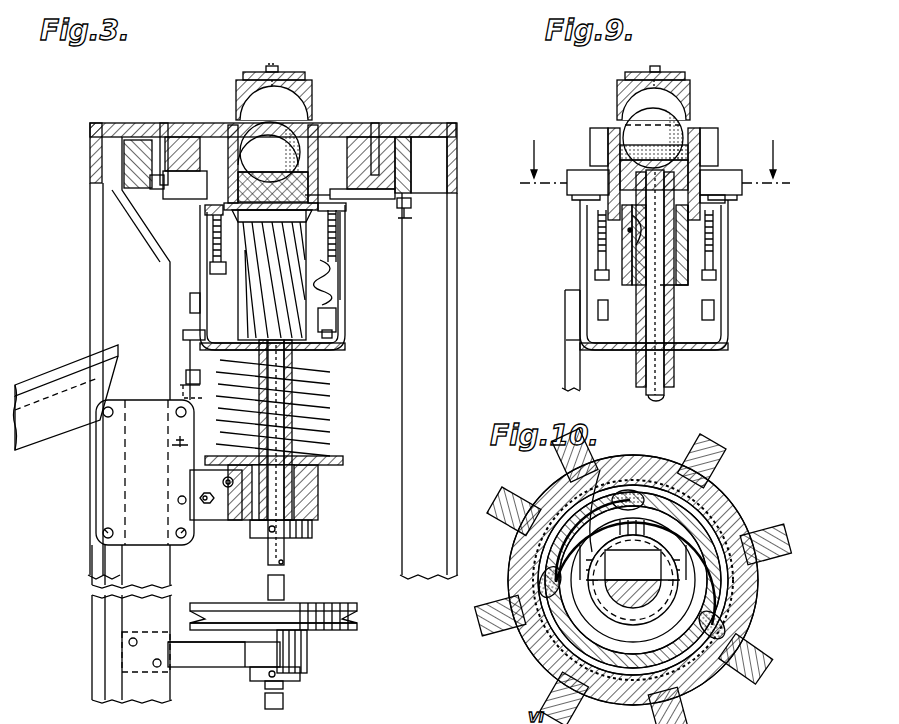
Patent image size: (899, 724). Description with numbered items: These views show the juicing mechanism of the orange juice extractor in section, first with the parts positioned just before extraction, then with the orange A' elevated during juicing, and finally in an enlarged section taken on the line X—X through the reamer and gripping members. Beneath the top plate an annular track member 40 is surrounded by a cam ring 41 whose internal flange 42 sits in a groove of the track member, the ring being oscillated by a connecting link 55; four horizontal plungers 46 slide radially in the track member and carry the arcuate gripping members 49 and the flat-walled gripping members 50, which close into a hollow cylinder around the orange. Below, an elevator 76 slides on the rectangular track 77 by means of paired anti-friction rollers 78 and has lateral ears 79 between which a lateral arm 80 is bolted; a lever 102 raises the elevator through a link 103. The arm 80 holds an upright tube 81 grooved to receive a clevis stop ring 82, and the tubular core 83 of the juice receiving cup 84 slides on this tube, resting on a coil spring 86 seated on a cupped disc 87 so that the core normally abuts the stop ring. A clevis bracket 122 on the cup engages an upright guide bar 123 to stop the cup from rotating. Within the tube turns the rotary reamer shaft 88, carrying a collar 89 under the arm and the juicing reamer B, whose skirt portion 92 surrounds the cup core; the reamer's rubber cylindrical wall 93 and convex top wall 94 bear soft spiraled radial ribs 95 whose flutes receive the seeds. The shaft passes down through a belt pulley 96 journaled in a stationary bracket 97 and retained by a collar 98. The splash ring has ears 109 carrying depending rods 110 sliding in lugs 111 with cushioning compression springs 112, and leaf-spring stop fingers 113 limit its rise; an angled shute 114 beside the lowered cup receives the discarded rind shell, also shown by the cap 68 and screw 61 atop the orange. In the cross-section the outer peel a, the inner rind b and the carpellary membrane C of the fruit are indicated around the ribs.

In FIG. 3, the screw 61 is at (292, 72).
In FIG. 9, the screw 61 is at (636, 72).
In FIG. 3, the cap 68 is at (300, 92).
In FIG. 9, the cap 68 is at (617, 92).
In FIG. 3, the ball A' is at (270, 152).
In FIG. 9, the ball A' is at (653, 138).
In FIG. 3, the annular track member 40 is at (362, 135).
In FIG. 3, the internal flange 42 is at (405, 137).
In FIG. 3, the cam ring 41 is at (410, 175).
In FIG. 3, the connecting link 55 is at (412, 212).
In FIG. 3, the leaf-spring stop fingers 113 is at (338, 210).
In FIG. 9, the leaf-spring stop fingers 113 is at (726, 202).
In FIG. 3, the ears 109 is at (338, 240).
In FIG. 3, the cushioning compression spring 112 is at (341, 258).
In FIG. 3, the lugs 111 is at (326, 284).
In FIG. 3, the depending rods 110 is at (336, 322).
In FIG. 3, the juice receiving cup 84 is at (338, 348).
In FIG. 9, the juice receiving cup 84 is at (722, 318).
In FIG. 3, the radial ribs 95 is at (250, 278).
In FIG. 9, the radial ribs 95 is at (690, 262).
In FIG. 10, the radial ribs 95 is at (640, 505).
In FIG. 3, the juicing reamer B is at (305, 335).
In FIG. 9, the juicing reamer B is at (680, 280).
In FIG. 3, the upright guide bar 123 is at (188, 300).
In FIG. 3, the clevis bracket 122 is at (183, 335).
In FIG. 3, the lever 102 is at (186, 376).
In FIG. 3, the link 103 is at (178, 388).
In FIG. 3, the track 77 is at (145, 281).
In FIG. 3, the shute 114 is at (48, 378).
In FIG. 3, the elevator 76 is at (110, 478).
In FIG. 3, the anti-friction rollers 78 is at (100, 540).
In FIG. 3, the lateral ears 79 is at (220, 510).
In FIG. 3, the coil spring 86 is at (305, 400).
In FIG. 3, the upright tube 81 is at (312, 447).
In FIG. 10, the upright tube 81 is at (598, 460).
In FIG. 3, the cupped disc 87 is at (343, 461).
In FIG. 3, the lateral arm 80 is at (300, 498).
In FIG. 3, the collar 89 is at (312, 529).
In FIG. 3, the rotary reamer shaft 88 is at (285, 552).
In FIG. 9, the rotary reamer shaft 88 is at (660, 398).
In FIG. 10, the rotary reamer shaft 88 is at (620, 592).
In FIG. 3, the belt pulley 96 is at (345, 605).
In FIG. 3, the stationary bracket 97 is at (210, 660).
In FIG. 3, the collar 98 is at (300, 676).
In FIG. 9, the top wall 94 is at (675, 160).
In FIG. 9, the horizontal plungers 46 is at (580, 172).
In FIG. 9, the section line X— X is at (655, 173).
In FIG. 9, the tubular core 83 is at (640, 318).
In FIG. 9, the tubular skirt portion 92 is at (628, 230).
In FIG. 9, the clevis stop ring 82 is at (636, 250).
In FIG. 10, the clevis stop ring 82 is at (690, 608).
In FIG. 10, the gripping members 50 is at (548, 522).
In FIG. 10, the gripping members 49 is at (706, 512).
In FIG. 10, the cylindrical wall 93 is at (700, 548).
In FIG. 10, the outer peel a is at (680, 562).
In FIG. 10, the carpellary membrane C is at (700, 640).
In FIG. 10, the inner rind b is at (665, 650).